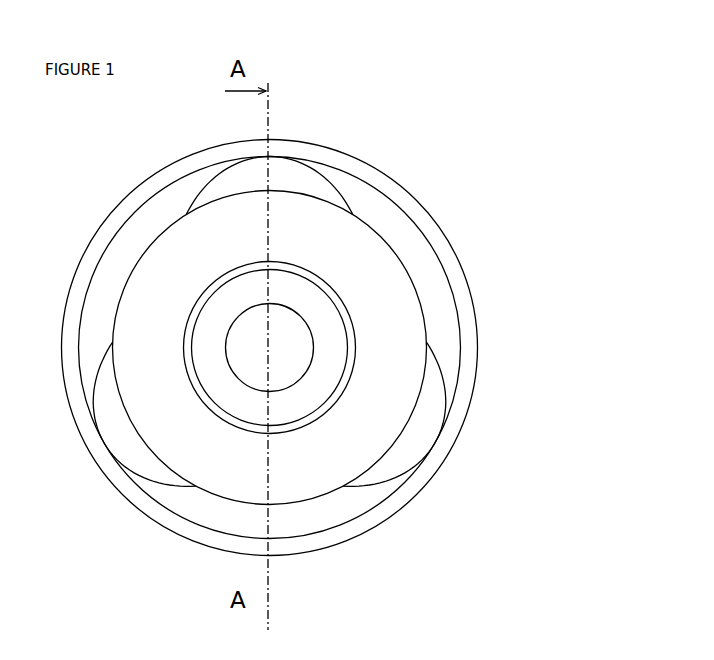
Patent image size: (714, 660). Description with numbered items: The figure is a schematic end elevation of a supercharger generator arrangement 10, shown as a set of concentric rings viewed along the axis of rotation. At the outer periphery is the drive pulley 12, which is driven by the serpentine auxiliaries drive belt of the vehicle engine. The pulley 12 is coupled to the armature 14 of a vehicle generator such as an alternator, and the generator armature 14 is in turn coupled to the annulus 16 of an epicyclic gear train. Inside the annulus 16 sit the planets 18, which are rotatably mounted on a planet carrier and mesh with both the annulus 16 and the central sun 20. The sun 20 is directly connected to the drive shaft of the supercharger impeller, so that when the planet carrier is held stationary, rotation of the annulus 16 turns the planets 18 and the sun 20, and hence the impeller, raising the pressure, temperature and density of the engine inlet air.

The supercharger generator arrangement 10 is at (523, 163).
The drive pulley 12 is at (332, 333).
The armature 14 is at (363, 278).
The annulus 16 is at (478, 376).
The planets 18 is at (225, 183).
The sun 20 is at (292, 365).